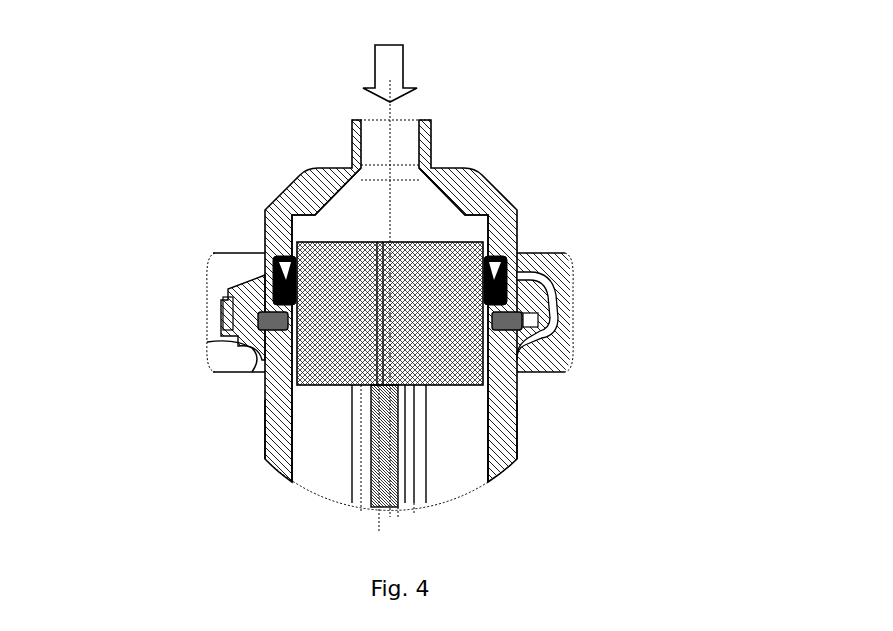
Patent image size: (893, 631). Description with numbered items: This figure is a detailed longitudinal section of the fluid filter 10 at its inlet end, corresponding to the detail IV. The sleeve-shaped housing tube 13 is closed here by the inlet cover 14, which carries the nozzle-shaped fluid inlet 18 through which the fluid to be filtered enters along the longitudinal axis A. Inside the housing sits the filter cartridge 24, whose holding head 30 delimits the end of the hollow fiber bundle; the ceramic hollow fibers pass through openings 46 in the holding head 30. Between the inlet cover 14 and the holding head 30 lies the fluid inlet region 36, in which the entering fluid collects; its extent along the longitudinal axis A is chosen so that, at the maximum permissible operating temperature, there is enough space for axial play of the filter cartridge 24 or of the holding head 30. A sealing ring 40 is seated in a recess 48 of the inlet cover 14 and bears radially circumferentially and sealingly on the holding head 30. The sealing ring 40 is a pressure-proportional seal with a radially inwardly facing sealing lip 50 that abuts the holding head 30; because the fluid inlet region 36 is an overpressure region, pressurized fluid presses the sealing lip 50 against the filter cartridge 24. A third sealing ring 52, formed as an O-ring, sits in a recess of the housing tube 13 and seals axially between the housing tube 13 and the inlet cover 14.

The fluid filter 10 is at (155, 133).
The housing tube 13 is at (280, 437).
The inlet cover 14 is at (458, 187).
The fluid inlet 18 is at (375, 156).
The filter cartridge 24 is at (408, 470).
The holding head 30 is at (437, 347).
The fluid inlet region 36 is at (313, 227).
The sealing ring 40 is at (247, 317).
The openings 46 is at (380, 242).
The recess 48 is at (545, 262).
The sealing lip 50 is at (265, 273).
The third sealing ring 52 is at (540, 320).
The longitudinal axis A is at (398, 105).
The detail IV is at (620, 178).